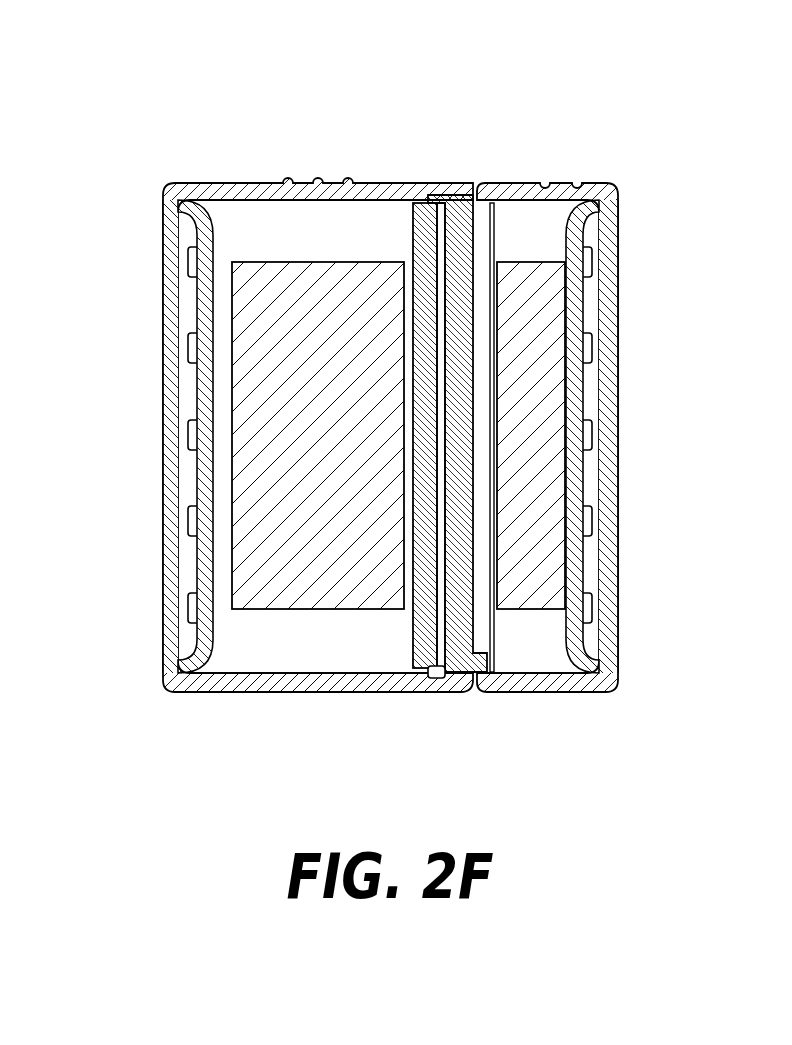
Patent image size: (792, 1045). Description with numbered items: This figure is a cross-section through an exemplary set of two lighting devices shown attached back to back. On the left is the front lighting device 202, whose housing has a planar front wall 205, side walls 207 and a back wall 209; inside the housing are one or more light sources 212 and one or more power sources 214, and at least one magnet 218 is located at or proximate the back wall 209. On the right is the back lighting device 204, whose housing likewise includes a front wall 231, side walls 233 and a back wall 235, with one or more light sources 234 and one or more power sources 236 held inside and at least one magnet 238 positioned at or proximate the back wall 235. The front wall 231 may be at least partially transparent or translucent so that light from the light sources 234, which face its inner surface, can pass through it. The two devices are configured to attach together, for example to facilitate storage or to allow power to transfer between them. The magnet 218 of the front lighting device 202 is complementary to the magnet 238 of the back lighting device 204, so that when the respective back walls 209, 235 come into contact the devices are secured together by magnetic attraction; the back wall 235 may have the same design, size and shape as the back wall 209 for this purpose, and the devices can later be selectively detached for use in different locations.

The front lighting device 202 is at (176, 104).
The back lighting device 204 is at (640, 146).
The front wall 205 is at (162, 582).
The side walls 207 is at (215, 693).
The back wall 209 is at (441, 679).
The light sources 212 is at (188, 432).
The power sources 214 is at (305, 280).
The magnet 218 is at (424, 212).
The front wall 231 is at (612, 397).
The side walls 233 is at (565, 693).
The light sources 234 is at (591, 258).
The back wall 235 is at (442, 203).
The power sources 236 is at (525, 285).
The magnet 238 is at (460, 240).